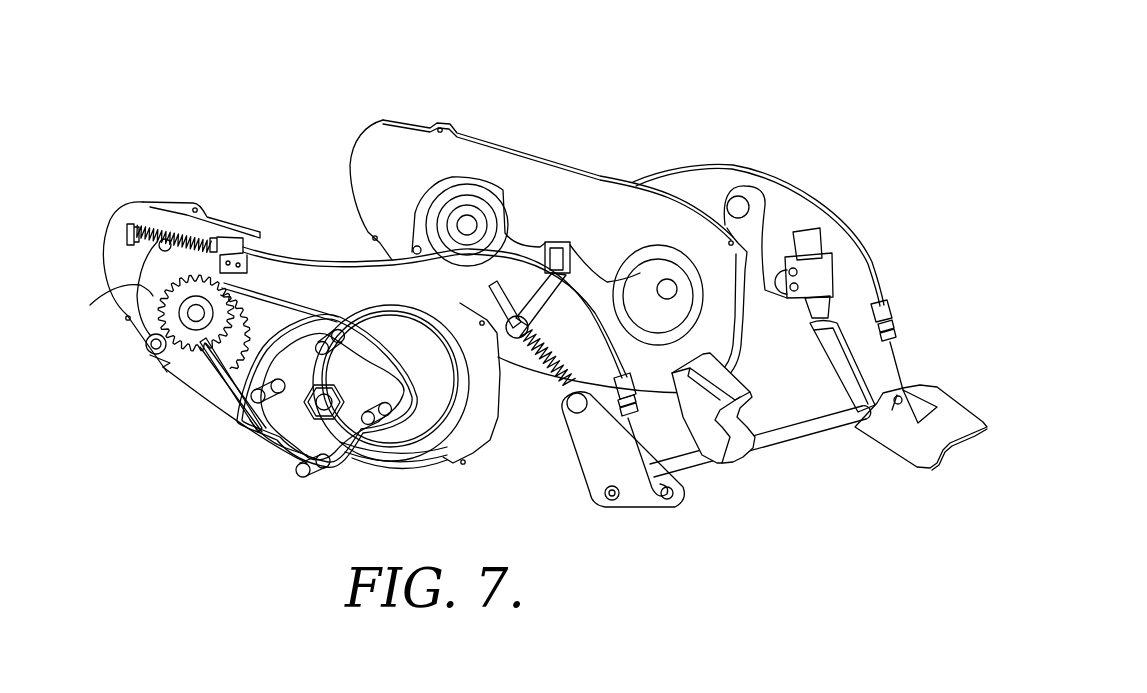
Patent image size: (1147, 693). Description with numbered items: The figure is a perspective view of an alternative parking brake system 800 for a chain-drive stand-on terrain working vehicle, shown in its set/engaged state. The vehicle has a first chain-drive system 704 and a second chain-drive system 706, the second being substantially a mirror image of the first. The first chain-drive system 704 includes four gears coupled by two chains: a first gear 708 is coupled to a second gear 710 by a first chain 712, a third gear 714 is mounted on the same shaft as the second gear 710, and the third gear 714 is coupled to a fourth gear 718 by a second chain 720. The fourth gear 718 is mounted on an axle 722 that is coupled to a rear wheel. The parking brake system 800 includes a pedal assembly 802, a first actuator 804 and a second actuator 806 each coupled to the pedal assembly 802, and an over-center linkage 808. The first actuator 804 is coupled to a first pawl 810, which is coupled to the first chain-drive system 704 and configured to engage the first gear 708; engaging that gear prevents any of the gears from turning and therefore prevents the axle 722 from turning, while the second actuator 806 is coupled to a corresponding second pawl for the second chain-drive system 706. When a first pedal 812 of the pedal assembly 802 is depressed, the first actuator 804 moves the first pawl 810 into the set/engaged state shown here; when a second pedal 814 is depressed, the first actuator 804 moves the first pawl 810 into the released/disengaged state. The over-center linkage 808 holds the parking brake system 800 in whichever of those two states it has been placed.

The first chain-drive system 704 is at (108, 362).
The second chain-drive system 706 is at (577, 185).
The first gear 708 is at (190, 262).
The second gear 710 is at (225, 368).
The first chain 712 is at (268, 303).
The third gear 714 is at (262, 438).
The fourth gear 718 is at (372, 446).
The second chain 720 is at (405, 457).
The axle 722 is at (391, 373).
The parking brake system 800 is at (884, 164).
The pedal assembly 802 is at (820, 427).
The first actuator 804 is at (307, 260).
The second actuator 806 is at (713, 167).
The over-center linkage 808 is at (533, 418).
The first pawl 810 is at (153, 297).
The first pedal 812 is at (946, 407).
The second pedal 814 is at (728, 384).